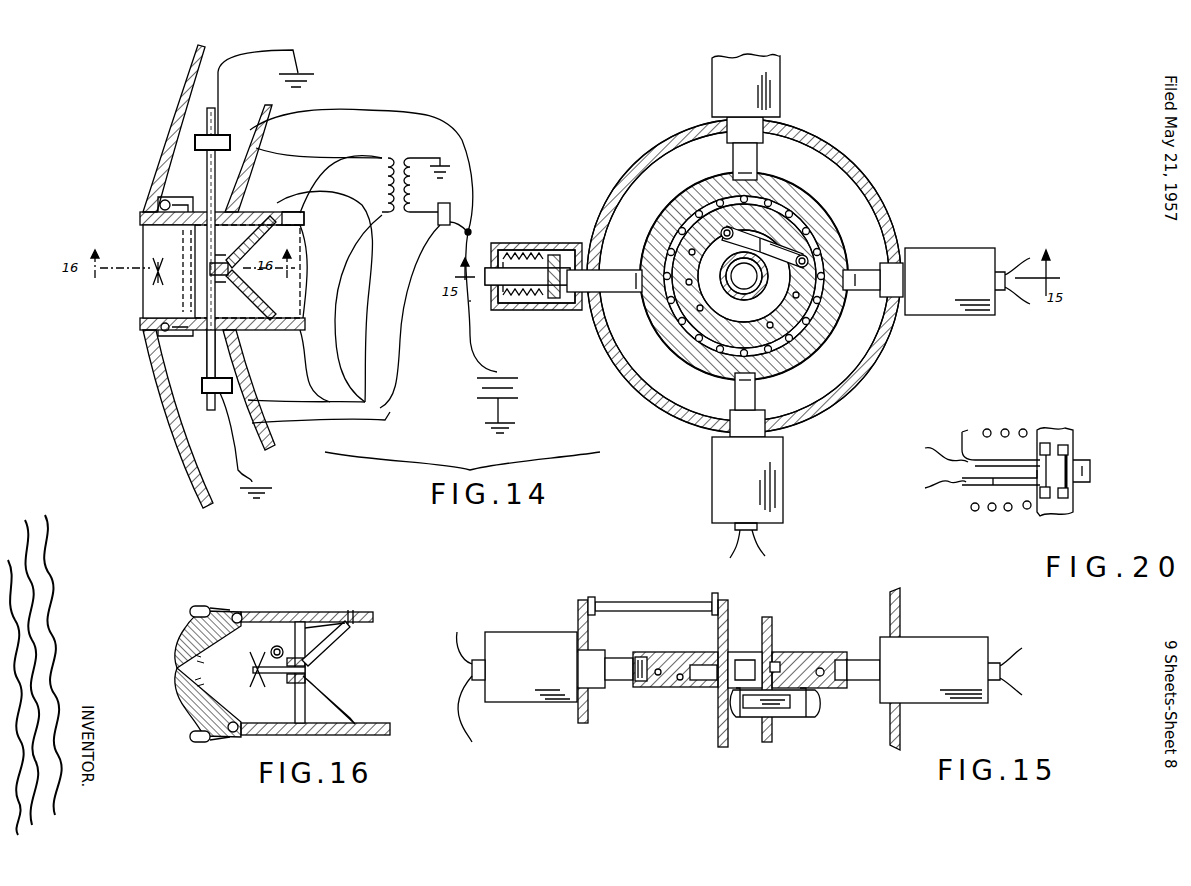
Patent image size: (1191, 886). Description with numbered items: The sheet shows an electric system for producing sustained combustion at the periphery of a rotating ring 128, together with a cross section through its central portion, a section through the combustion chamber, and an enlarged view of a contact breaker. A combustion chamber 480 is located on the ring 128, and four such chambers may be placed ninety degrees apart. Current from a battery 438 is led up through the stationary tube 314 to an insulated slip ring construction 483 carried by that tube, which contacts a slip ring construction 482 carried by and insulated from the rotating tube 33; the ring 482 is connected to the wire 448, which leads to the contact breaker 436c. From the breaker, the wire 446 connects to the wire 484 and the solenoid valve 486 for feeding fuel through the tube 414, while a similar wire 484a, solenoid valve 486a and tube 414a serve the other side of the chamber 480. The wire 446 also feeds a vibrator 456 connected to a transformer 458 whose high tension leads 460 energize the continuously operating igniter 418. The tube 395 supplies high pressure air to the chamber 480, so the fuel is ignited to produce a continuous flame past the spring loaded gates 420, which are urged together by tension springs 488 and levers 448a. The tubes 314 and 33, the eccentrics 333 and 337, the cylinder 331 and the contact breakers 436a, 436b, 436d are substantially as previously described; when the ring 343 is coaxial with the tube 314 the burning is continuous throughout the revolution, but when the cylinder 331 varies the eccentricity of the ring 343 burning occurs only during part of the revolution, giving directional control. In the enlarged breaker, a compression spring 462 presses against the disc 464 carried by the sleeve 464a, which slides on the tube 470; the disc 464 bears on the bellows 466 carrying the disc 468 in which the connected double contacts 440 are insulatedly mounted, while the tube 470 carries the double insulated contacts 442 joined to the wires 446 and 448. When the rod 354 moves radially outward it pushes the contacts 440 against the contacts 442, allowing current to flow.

In FIG. 14, the ring 128 is at (182, 135).
In FIG. 14, the tube 395 is at (301, 318).
In FIG. 16, the tube 395 is at (372, 612).
In FIG. 14, the igniter 418 is at (148, 262).
In FIG. 16, the igniter 418 is at (256, 686).
In FIG. 14, the tube 414 is at (206, 172).
In FIG. 14, the tube 414a is at (207, 350).
In FIG. 14, the solenoid valve 486 is at (222, 122).
In FIG. 14, the solenoid valve 486a is at (212, 395).
In FIG. 14, the combustion chamber 480 is at (152, 348).
In FIG. 16, the combustion chamber 480 is at (255, 612).
In FIG. 14, the wire 484 is at (443, 118).
In FIG. 14, the wire 484a is at (392, 420).
In FIG. 14, the high tension leads 460 is at (384, 157).
In FIG. 16, the high tension leads 460 is at (350, 620).
In FIG. 14, the transformer 458 is at (410, 156).
In FIG. 14, the vibrator 456 is at (438, 225).
In FIG. 14, the battery 438 is at (514, 392).
In FIG. 14, the wire 448 is at (470, 305).
In FIG. 15, the wire 448 is at (480, 712).
In FIG. 20, the wire 448 is at (927, 490).
In FIG. 14, the wire 446 is at (486, 270).
In FIG. 15, the wire 446 is at (456, 632).
In FIG. 20, the wire 446 is at (928, 455).
In FIG. 14, the contact breaker 436c is at (582, 243).
In FIG. 14, the contact breaker 436a is at (948, 252).
In FIG. 14, the contact breaker 436b is at (782, 62).
In FIG. 14, the contact breaker 436d is at (784, 450).
In FIG. 14, the ring 343 is at (833, 223).
In FIG. 15, the ring 343 is at (830, 652).
In FIG. 14, the stationary tube 314 is at (733, 262).
In FIG. 15, the stationary tube 314 is at (773, 625).
In FIG. 14, the cylinder 331 is at (765, 236).
In FIG. 15, the cylinder 331 is at (792, 717).
In FIG. 16, the spring loaded gates 420 is at (180, 650).
In FIG. 16, the tension springs 488 is at (192, 612).
In FIG. 16, the levers 448a is at (212, 607).
In FIG. 15, the slip ring construction 482 is at (658, 602).
In FIG. 15, the slip ring construction 483 is at (716, 596).
In FIG. 15, the eccentric 337 is at (658, 690).
In FIG. 15, the eccentric 333 is at (700, 690).
In FIG. 15, the rotating tube 33 is at (903, 612).
In FIG. 20, the double insulated contacts 442 is at (1045, 428).
In FIG. 20, the connected double contacts 440 is at (1070, 452).
In FIG. 20, the rod 354 is at (1092, 470).
In FIG. 20, the tube 470 is at (962, 430).
In FIG. 20, the sleeve 464a is at (1018, 484).
In FIG. 20, the disc 468 is at (1073, 505).
In FIG. 20, the bellows 466 is at (1055, 518).
In FIG. 20, the compression spring 462 is at (972, 510).
In FIG. 20, the disc 464 is at (1028, 510).